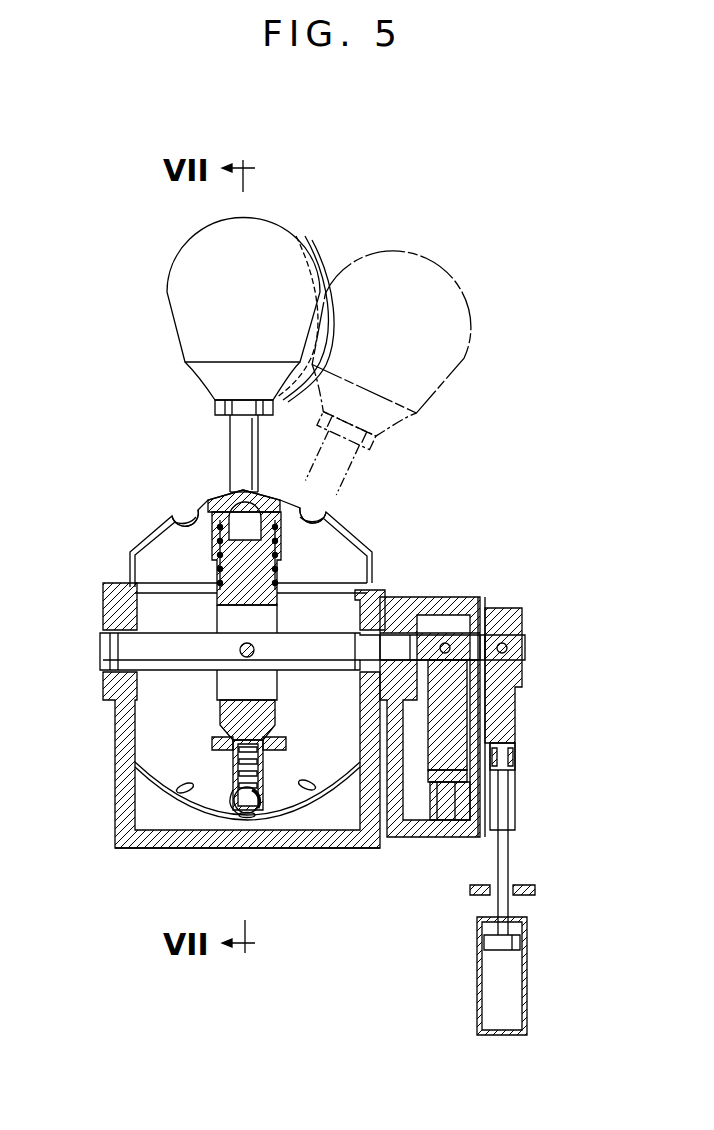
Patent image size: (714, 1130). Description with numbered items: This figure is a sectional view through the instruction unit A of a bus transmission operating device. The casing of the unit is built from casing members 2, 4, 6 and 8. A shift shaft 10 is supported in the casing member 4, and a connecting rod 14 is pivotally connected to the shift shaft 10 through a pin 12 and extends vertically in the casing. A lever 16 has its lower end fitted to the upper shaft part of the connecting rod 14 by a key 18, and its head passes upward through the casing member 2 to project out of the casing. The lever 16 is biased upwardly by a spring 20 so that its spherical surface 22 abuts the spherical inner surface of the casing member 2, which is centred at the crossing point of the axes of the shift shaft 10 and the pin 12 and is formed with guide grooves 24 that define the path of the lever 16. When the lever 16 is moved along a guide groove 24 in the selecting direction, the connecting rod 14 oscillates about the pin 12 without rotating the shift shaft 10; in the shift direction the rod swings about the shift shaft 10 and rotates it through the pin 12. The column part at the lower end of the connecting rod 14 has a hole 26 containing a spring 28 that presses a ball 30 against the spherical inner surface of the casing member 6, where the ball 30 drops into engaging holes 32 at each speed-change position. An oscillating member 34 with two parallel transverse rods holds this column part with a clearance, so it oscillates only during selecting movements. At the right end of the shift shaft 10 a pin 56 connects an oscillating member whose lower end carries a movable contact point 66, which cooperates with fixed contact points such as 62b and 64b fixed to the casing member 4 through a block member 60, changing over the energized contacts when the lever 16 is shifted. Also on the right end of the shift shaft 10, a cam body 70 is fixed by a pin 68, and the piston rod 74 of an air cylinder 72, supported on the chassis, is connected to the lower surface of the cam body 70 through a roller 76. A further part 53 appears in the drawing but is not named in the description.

The casing member 2 is at (135, 542).
The casing member 4 is at (105, 690).
The casing member 6 is at (133, 762).
The casing member 8 is at (115, 795).
The shift shaft 10 is at (105, 656).
The pin 12 is at (235, 657).
The connecting rod 14 is at (217, 598).
The lever 16 is at (238, 448).
The key 18 is at (220, 546).
The spring 20 is at (277, 546).
The spherical surface 22 is at (274, 500).
The guide grooves 24 is at (187, 516).
The hole 26 is at (238, 777).
The spring 28 is at (240, 810).
The ball 30 is at (252, 813).
The engaging holes 32 is at (306, 782).
The oscillating member 34 is at (212, 743).
The slider block 53 is at (432, 680).
The pin 56 is at (447, 643).
The block member 60 is at (435, 800).
The fixed contact point 62b is at (460, 785).
The fixed contact point 64b is at (447, 800).
The movable contact point 66 is at (428, 772).
The pin 68 is at (507, 649).
The cam body 70 is at (515, 688).
The air cylinder 72 is at (526, 960).
The piston rod 74 is at (509, 848).
The roller 76 is at (516, 752).
The instruction unit A is at (414, 507).